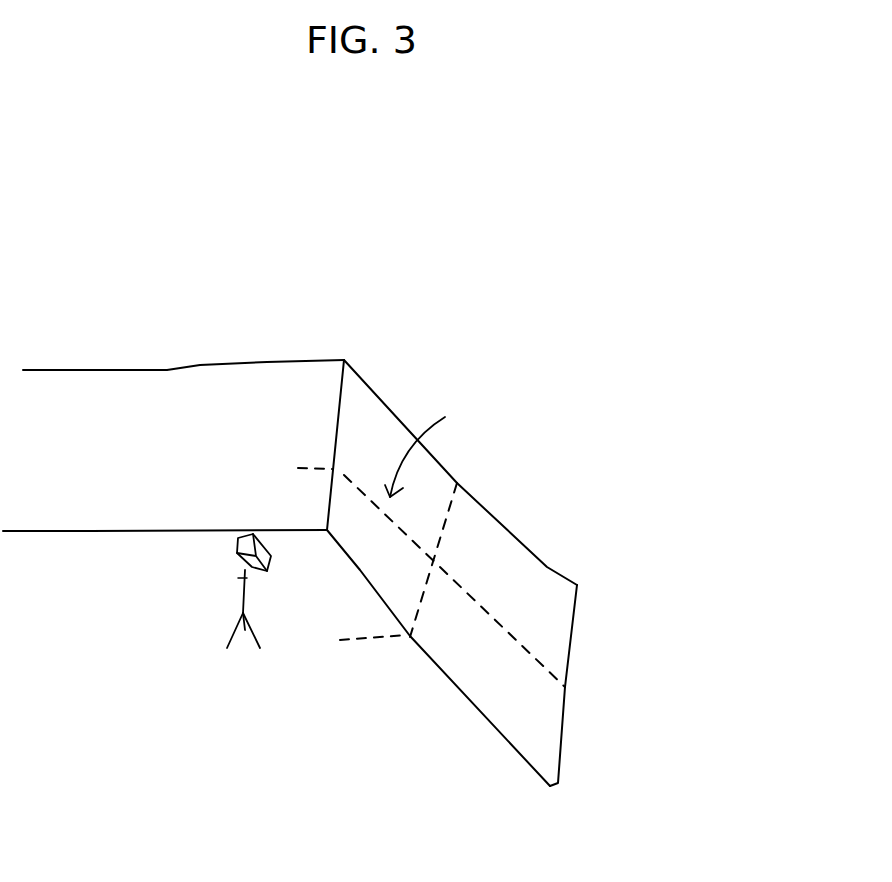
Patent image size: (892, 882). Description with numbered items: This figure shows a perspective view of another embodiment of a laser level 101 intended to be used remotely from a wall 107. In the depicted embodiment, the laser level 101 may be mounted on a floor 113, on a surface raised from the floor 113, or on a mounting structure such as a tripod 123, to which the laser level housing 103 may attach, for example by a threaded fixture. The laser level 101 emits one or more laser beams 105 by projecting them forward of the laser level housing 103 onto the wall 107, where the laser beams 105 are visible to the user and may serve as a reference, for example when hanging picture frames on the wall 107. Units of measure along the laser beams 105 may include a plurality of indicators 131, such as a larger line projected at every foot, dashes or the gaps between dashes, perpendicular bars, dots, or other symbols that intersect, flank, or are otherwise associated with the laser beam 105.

The laser level 101 is at (210, 598).
The laser level housing 103 is at (238, 547).
The laser beams 105 is at (343, 473).
The wall 107 is at (548, 565).
The floor 113 is at (370, 709).
The tripod 123 is at (235, 650).
The indicators 131 is at (429, 445).